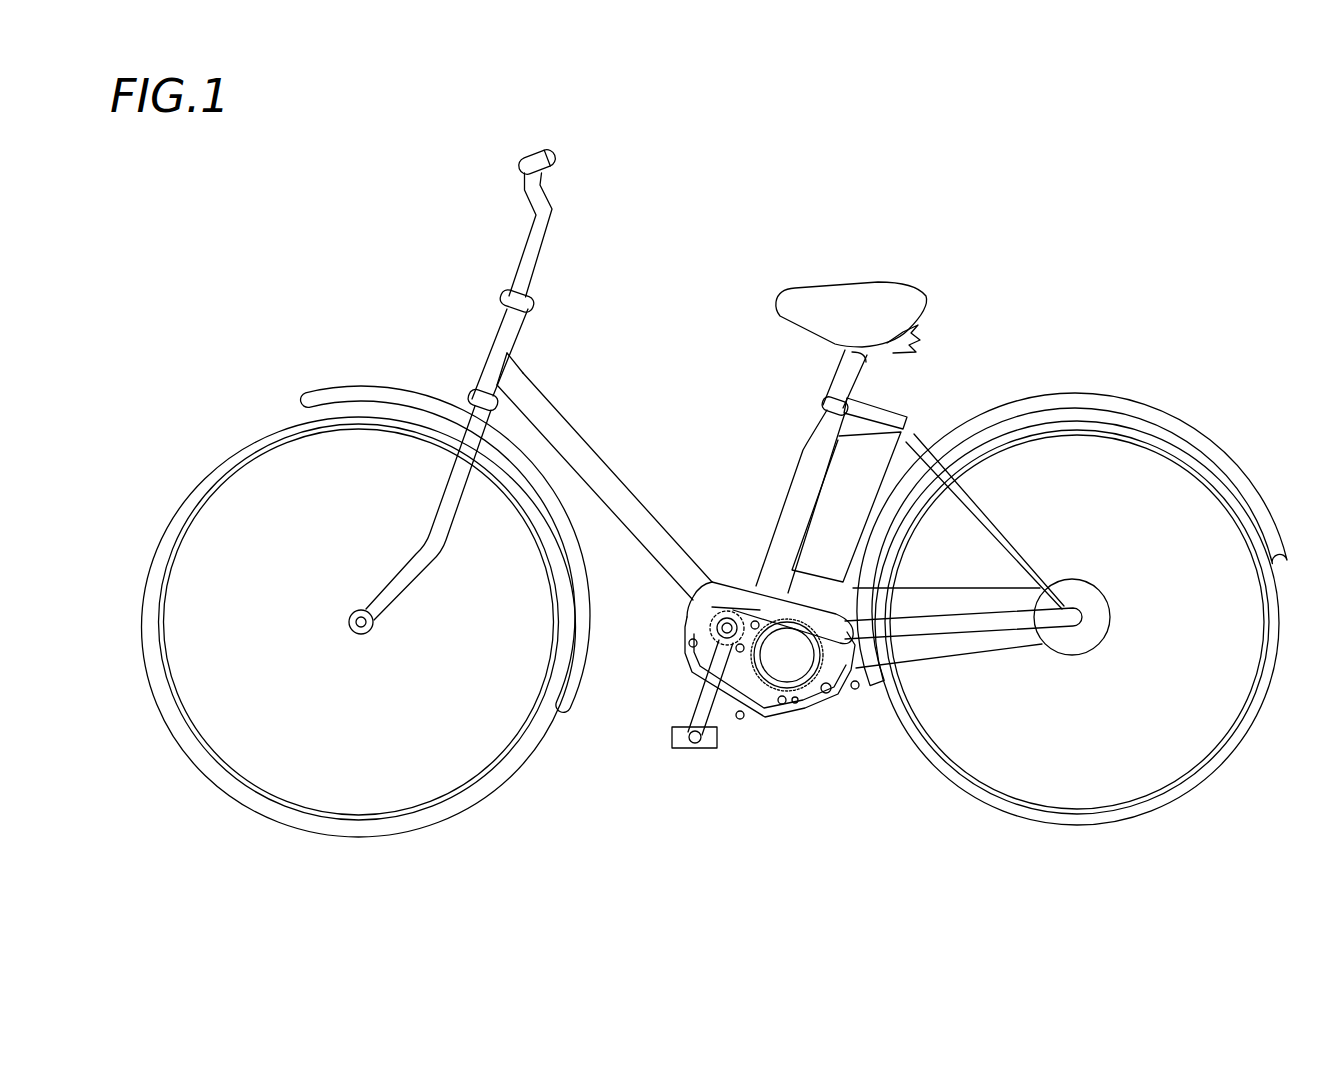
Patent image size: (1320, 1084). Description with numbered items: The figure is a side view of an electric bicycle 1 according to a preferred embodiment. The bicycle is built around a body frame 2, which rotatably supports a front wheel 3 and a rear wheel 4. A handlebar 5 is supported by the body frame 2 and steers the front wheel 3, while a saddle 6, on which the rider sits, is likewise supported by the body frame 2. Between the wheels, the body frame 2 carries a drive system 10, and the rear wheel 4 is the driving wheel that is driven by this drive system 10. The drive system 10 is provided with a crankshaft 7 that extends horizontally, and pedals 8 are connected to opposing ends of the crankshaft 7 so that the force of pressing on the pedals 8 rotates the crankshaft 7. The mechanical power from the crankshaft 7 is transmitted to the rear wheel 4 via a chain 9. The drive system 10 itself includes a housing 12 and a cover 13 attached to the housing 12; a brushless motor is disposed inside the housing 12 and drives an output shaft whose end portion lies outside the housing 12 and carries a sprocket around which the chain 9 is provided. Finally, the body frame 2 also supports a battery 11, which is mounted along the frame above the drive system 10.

The electric bicycle 1 is at (1141, 228).
The body frame 2 is at (628, 497).
The front wheel 3 is at (465, 820).
The rear wheel 4 is at (1071, 825).
The handlebar 5 is at (537, 156).
The saddle 6 is at (845, 287).
The crankshaft 7 is at (732, 617).
The pedals 8 is at (680, 750).
The chain 9 is at (961, 669).
The drive system 10 is at (808, 733).
The battery 11 is at (827, 510).
The housing 12 is at (754, 722).
The cover 13 is at (798, 647).